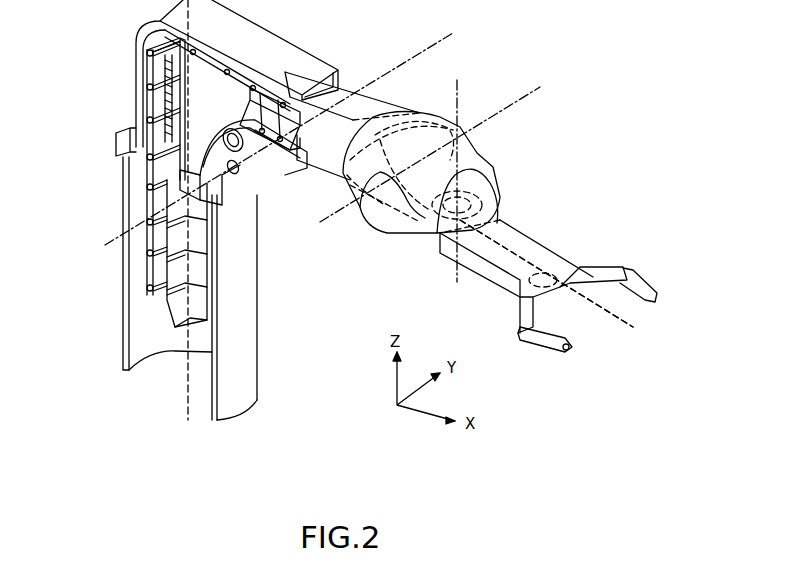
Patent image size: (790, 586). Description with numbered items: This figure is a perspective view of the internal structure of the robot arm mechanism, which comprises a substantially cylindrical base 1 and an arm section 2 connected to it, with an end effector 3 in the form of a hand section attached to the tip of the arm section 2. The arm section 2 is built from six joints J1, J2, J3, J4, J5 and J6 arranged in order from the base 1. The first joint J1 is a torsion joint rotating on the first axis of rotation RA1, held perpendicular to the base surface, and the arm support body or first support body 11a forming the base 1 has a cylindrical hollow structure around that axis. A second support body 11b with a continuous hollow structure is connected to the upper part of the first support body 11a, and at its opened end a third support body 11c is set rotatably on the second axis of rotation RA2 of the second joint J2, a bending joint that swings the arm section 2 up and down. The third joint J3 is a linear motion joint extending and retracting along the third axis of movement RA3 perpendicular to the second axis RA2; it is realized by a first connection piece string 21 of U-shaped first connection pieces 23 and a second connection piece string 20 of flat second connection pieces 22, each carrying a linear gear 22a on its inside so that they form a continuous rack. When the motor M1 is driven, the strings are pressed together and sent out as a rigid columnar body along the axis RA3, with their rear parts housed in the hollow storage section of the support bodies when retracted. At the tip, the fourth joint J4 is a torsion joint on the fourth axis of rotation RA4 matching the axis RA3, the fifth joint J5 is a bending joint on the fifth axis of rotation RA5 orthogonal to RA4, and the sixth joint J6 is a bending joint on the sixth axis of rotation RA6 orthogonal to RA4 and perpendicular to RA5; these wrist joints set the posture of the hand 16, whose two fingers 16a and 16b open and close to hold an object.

The base 1 is at (135, 225).
The arm section 2 is at (338, 58).
The end effector 3 is at (532, 226).
The first support body 11a is at (250, 303).
The second support body 11b is at (136, 78).
The third support body 11c is at (290, 46).
The hand 16 is at (545, 380).
The finger 16a is at (568, 352).
The finger 16b is at (596, 268).
The second connection piece string 20 is at (143, 62).
The first connection piece string 21 is at (163, 305).
The second connection piece 22 is at (150, 107).
The linear gear 22a is at (158, 97).
The first connection piece 23 is at (203, 277).
The first joint J1 is at (114, 140).
The second joint J2 is at (247, 196).
The third joint J3 is at (368, 98).
The fourth joint J4 is at (415, 130).
The fifth joint J5 is at (372, 210).
The sixth joint J6 is at (440, 230).
The motor M1 is at (272, 178).
The first axis of rotation RA1 is at (188, 224).
The second axis of rotation RA2 is at (298, 135).
The third axis of movement RA3 is at (578, 285).
The fourth axis of rotation RA4 is at (546, 273).
The fifth axis of rotation RA5 is at (449, 147).
The sixth axis of rotation RA6 is at (459, 170).